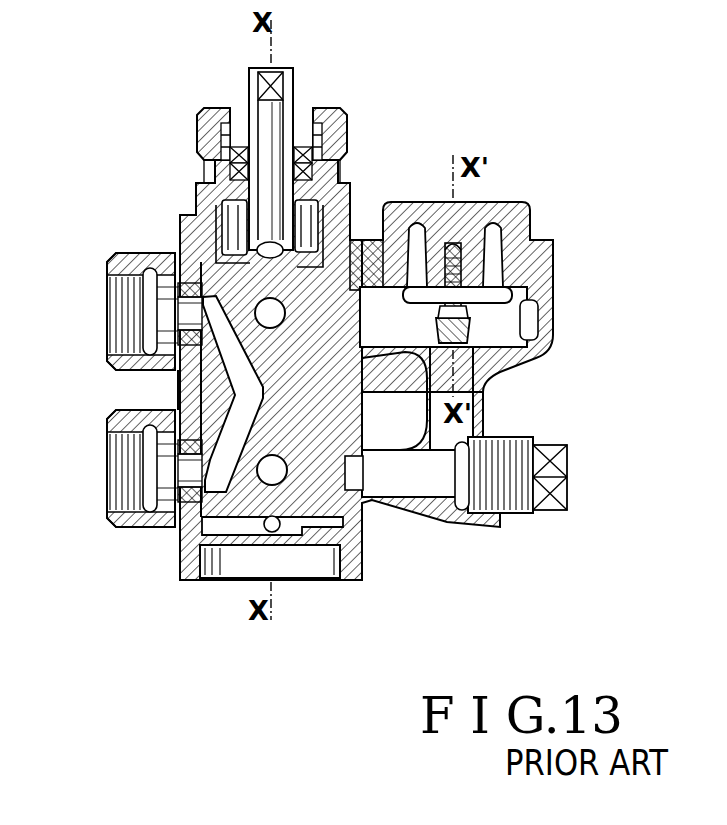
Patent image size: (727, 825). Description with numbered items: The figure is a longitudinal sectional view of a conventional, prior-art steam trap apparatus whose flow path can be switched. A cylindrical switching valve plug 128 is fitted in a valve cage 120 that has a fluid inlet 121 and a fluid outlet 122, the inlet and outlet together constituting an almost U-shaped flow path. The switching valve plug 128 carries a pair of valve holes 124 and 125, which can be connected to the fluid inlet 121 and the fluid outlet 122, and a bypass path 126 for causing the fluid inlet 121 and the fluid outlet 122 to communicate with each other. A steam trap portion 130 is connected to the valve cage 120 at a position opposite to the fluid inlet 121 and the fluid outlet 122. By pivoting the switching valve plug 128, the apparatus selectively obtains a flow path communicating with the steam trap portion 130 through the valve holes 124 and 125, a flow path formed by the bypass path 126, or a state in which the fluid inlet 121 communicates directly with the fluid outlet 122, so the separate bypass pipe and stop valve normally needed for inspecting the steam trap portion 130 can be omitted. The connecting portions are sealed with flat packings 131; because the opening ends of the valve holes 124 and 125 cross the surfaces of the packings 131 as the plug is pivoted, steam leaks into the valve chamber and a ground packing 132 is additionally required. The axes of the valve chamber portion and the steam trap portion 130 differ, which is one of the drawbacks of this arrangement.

The valve cage 120 is at (433, 622).
The fluid inlet 121 is at (107, 293).
The fluid outlet 122 is at (107, 496).
The valve hole 124 is at (182, 247).
The valve hole 125 is at (362, 543).
The bypass path 126 is at (178, 398).
The cylindrical switching valve plug 128 is at (180, 543).
The steam trap portion 130 is at (495, 325).
The packing 131 is at (400, 203).
The ground packing 132 is at (301, 152).